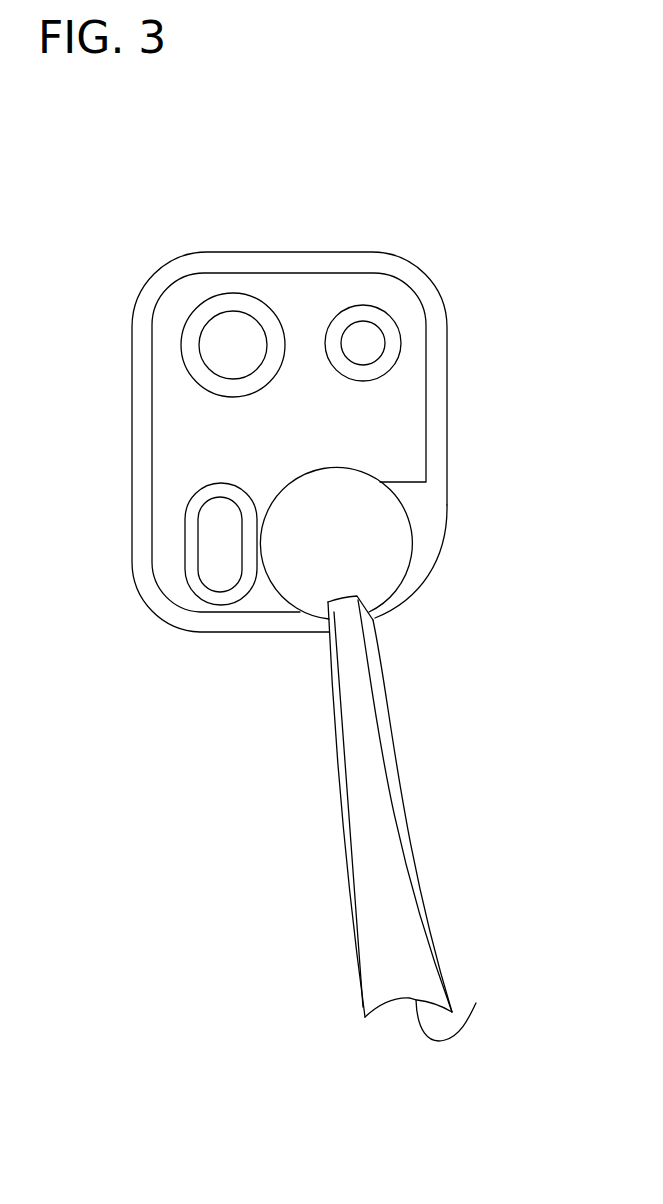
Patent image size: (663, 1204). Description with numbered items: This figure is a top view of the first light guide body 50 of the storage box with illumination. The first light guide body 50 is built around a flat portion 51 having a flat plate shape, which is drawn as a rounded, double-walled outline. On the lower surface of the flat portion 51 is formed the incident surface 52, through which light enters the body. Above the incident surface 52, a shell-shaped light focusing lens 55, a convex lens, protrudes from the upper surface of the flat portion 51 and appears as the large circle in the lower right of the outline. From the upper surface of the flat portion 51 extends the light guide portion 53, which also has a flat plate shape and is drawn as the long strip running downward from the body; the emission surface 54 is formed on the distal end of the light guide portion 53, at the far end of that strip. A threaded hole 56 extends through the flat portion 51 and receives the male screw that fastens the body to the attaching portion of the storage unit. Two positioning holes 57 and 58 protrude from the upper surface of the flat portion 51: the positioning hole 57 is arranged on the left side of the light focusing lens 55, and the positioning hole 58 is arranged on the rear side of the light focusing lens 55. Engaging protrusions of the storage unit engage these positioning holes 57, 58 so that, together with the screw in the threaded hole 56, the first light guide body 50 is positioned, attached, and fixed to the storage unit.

The first light guide body 50 is at (533, 131).
The flat portion 51 is at (293, 274).
The incident surface 52 is at (458, 508).
The light guide portion 53 is at (388, 745).
The emission surface 54 is at (476, 1003).
The light focusing lens 55 is at (390, 570).
The threaded hole 56 is at (203, 345).
The positioning hole 57 is at (203, 558).
The positioning hole 58 is at (382, 343).